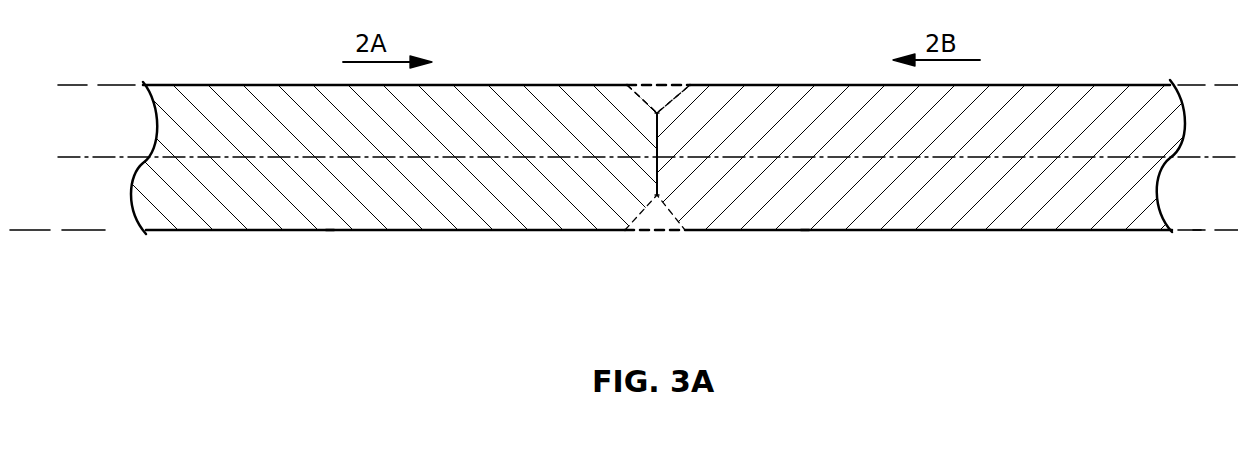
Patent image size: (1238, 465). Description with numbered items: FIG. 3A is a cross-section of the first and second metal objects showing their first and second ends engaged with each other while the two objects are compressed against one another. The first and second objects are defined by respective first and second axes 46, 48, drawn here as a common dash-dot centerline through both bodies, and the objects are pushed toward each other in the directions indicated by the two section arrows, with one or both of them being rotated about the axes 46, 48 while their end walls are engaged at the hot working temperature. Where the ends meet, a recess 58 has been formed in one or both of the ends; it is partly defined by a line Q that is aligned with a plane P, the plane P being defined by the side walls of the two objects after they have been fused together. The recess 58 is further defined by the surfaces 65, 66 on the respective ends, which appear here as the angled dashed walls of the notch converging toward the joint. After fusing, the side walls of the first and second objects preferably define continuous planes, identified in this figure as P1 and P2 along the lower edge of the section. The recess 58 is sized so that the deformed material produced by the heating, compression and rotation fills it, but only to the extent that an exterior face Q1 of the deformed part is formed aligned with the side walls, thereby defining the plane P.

The first axis 46 is at (248, 146).
The second axis 48 is at (1135, 155).
The recess 58 is at (660, 92).
The surface 65 is at (643, 100).
The surface 66 is at (670, 88).
The line Q is at (641, 85).
The exterior face Q1 is at (660, 228).
The plane P is at (1197, 230).
The continuous plane P1 is at (330, 231).
The continuous plane P2 is at (805, 231).